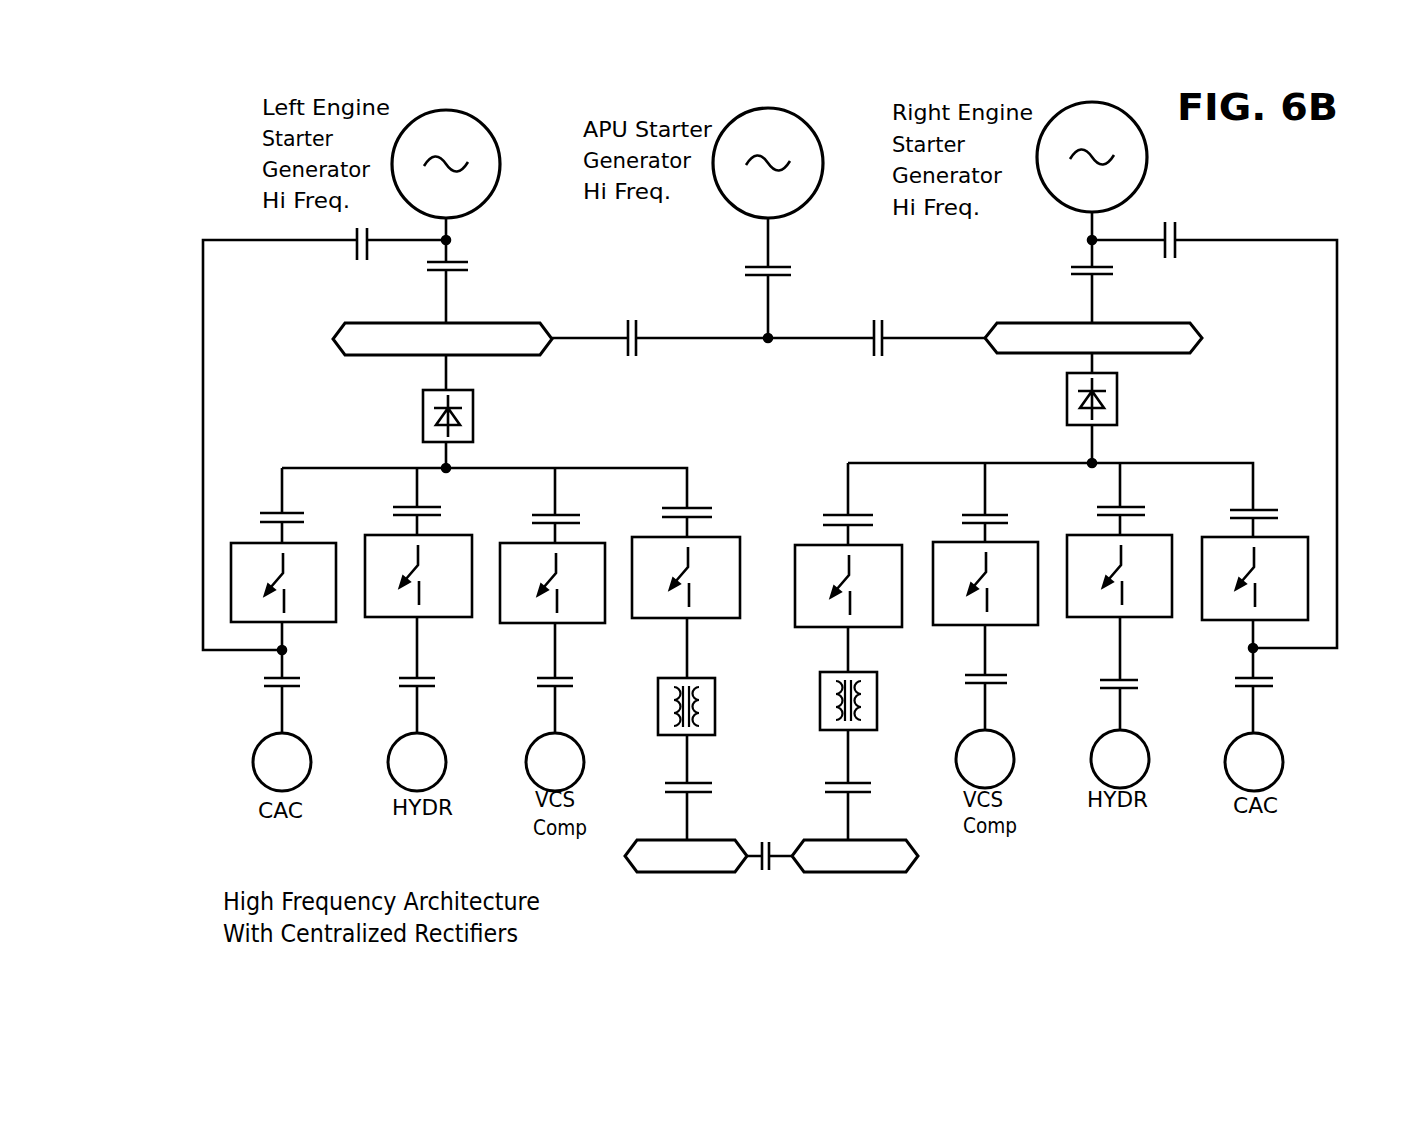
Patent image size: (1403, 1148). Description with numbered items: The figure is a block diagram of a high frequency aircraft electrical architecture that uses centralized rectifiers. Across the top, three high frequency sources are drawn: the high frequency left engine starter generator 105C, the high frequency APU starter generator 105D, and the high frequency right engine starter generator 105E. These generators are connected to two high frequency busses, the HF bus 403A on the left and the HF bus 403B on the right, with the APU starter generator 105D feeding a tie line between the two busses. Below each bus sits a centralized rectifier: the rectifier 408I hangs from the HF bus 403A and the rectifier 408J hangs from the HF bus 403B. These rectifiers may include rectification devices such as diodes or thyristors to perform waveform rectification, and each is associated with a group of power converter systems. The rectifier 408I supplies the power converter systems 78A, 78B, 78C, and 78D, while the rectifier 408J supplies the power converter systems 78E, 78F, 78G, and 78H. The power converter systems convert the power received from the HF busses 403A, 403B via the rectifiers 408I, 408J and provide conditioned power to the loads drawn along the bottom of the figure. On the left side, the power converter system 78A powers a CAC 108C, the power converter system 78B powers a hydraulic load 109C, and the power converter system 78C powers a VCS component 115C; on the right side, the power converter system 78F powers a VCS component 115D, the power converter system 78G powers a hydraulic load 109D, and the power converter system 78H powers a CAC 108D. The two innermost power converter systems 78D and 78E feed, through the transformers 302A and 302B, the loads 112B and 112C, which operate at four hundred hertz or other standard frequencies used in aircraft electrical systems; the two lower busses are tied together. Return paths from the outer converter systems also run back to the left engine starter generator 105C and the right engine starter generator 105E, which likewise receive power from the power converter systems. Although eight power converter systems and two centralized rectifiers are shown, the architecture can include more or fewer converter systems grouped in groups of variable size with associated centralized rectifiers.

The high frequency left engine starter generator 105C is at (446, 110).
The high frequency APU starter generator 105D is at (768, 108).
The high frequency right engine starter generator 105E is at (1092, 102).
The HF bus 403A is at (492, 323).
The HF bus 403B is at (1036, 323).
The rectifier 408I is at (473, 410).
The rectifier 408J is at (1067, 400).
The power converter system 78A is at (313, 622).
The power converter system 78B is at (448, 617).
The power converter system 78C is at (590, 623).
The power converter system 78D is at (727, 618).
The power converter system 78E is at (887, 627).
The power converter system 78F is at (1030, 625).
The power converter system 78G is at (1160, 617).
The power converter system 78H is at (1223, 620).
The transformer 302A is at (715, 690).
The transformer 302B is at (820, 718).
The 400 Hz load 112B is at (687, 872).
The 400 Hz load 112C is at (848, 872).
The CAC 108C is at (253, 762).
The hydraulic load 109C is at (446, 762).
The VCS component 115C is at (584, 762).
The VCS component 115D is at (956, 759).
The hydraulic load 109D is at (1149, 759).
The CAC 108D is at (1283, 762).